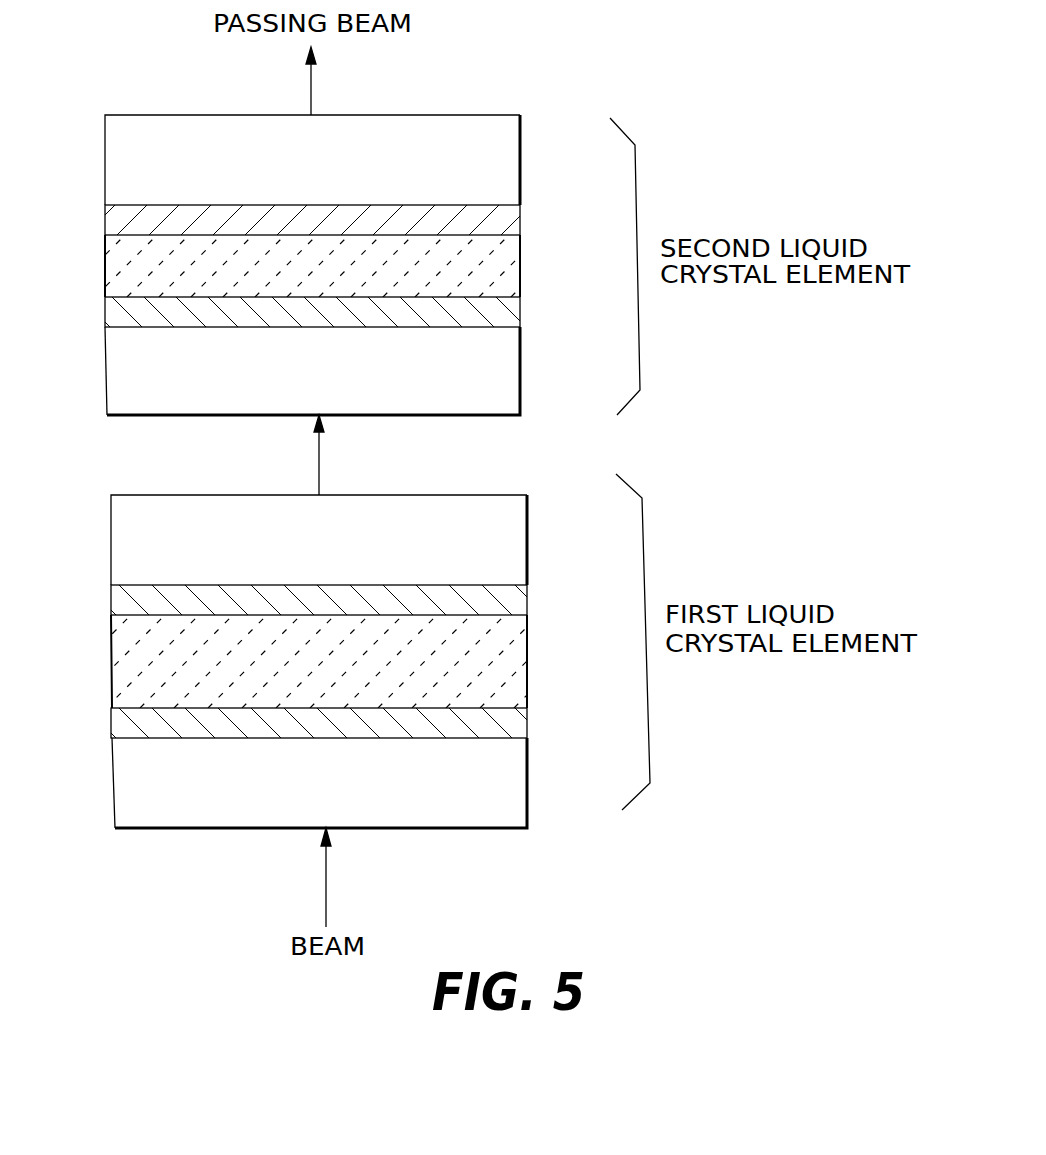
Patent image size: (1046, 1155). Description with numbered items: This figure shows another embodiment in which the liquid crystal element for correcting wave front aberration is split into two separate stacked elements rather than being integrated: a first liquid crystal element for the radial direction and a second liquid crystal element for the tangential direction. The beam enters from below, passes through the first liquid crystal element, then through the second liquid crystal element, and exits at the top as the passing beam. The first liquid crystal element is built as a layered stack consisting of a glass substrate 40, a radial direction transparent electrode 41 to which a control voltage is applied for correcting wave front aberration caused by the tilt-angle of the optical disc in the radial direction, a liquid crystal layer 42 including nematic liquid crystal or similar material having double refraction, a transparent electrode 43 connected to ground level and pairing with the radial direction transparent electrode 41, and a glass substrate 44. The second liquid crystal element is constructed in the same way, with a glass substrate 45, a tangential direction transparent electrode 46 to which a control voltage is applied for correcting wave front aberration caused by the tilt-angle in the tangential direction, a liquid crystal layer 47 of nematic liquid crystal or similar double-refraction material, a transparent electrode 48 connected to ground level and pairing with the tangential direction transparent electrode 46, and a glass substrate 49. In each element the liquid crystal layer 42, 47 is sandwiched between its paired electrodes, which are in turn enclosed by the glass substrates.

The glass substrate 40 is at (527, 788).
The radial direction transparent electrode 41 is at (112, 723).
The liquid crystal layer 42 is at (527, 665).
The transparent electrode 43 is at (112, 602).
The glass substrate 44 is at (527, 552).
The glass substrate 45 is at (522, 348).
The tangential direction transparent electrode 46 is at (106, 309).
The liquid crystal layer 47 is at (520, 270).
The transparent electrode 48 is at (105, 220).
The glass substrate 49 is at (520, 175).